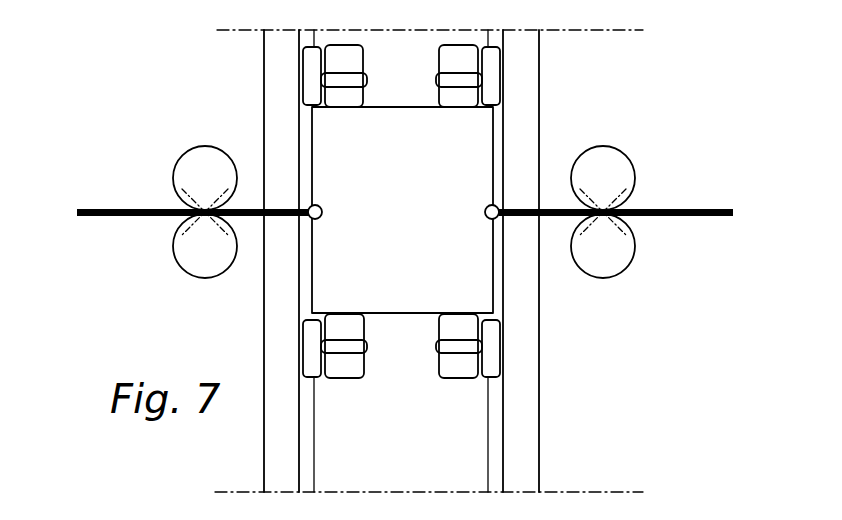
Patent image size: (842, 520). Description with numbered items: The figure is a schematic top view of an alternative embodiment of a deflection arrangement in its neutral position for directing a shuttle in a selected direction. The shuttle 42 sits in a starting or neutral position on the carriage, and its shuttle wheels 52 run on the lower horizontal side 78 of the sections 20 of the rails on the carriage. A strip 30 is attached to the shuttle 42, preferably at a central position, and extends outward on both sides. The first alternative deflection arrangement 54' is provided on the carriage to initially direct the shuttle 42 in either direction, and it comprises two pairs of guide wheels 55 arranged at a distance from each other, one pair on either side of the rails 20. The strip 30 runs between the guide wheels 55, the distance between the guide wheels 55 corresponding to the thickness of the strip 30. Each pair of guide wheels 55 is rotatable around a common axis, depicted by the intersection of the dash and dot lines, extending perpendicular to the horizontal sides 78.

The sections of the rails 20 is at (532, 302).
The strip 30 is at (660, 216).
The shuttle 42 is at (485, 140).
The shuttle wheels 52 is at (495, 362).
The first alternative deflection arrangement 54' is at (401, 169).
The guide wheels 55 is at (197, 160).
The lower horizontal side 78 is at (497, 452).